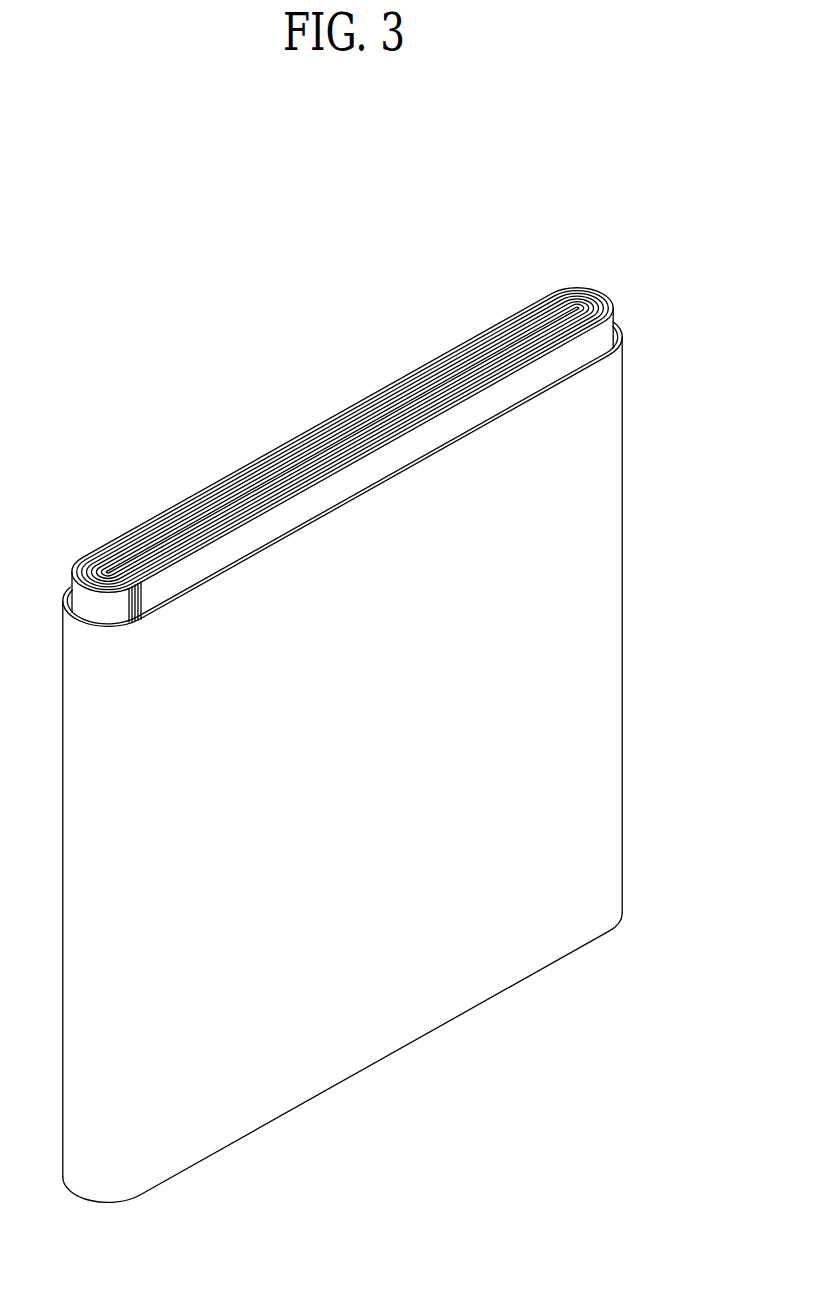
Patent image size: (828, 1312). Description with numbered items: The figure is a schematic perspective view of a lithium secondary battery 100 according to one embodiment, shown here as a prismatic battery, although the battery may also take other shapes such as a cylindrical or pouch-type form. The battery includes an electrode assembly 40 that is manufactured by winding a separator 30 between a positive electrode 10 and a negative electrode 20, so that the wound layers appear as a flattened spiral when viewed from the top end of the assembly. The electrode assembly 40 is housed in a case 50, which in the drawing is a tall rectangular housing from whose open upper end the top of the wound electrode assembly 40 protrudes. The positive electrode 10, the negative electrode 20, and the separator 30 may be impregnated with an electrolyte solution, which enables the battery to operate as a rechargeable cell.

The lithium secondary battery 100 is at (322, 219).
The positive electrode 10 is at (614, 298).
The negative electrode 20 is at (573, 297).
The separator 30 is at (591, 291).
The electrode assembly 40 is at (307, 413).
The case 50 is at (603, 609).